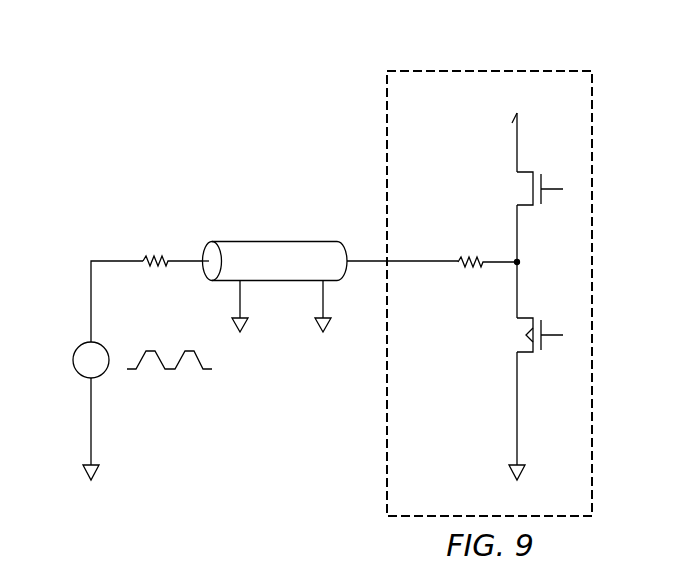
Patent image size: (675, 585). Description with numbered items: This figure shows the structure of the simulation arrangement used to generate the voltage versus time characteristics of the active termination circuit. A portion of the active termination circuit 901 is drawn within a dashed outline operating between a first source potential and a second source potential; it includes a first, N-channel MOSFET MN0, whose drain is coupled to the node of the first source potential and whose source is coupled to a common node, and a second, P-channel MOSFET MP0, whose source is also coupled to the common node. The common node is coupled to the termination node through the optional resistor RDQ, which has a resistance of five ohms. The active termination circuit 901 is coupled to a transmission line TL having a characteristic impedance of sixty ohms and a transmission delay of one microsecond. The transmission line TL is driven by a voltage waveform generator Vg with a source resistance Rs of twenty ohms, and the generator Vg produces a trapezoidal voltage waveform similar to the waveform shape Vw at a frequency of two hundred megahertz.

The active termination circuit 901 is at (514, 70).
The voltage waveform generator Vg is at (96, 370).
The waveform shape Vw is at (169, 350).
The source resistance Rs is at (169, 260).
The transmission line TL is at (331, 287).
The optional resistor RDQ is at (484, 262).
The N-channel MOSFET MN0 is at (521, 188).
The P-channel MOSFET MP0 is at (522, 335).